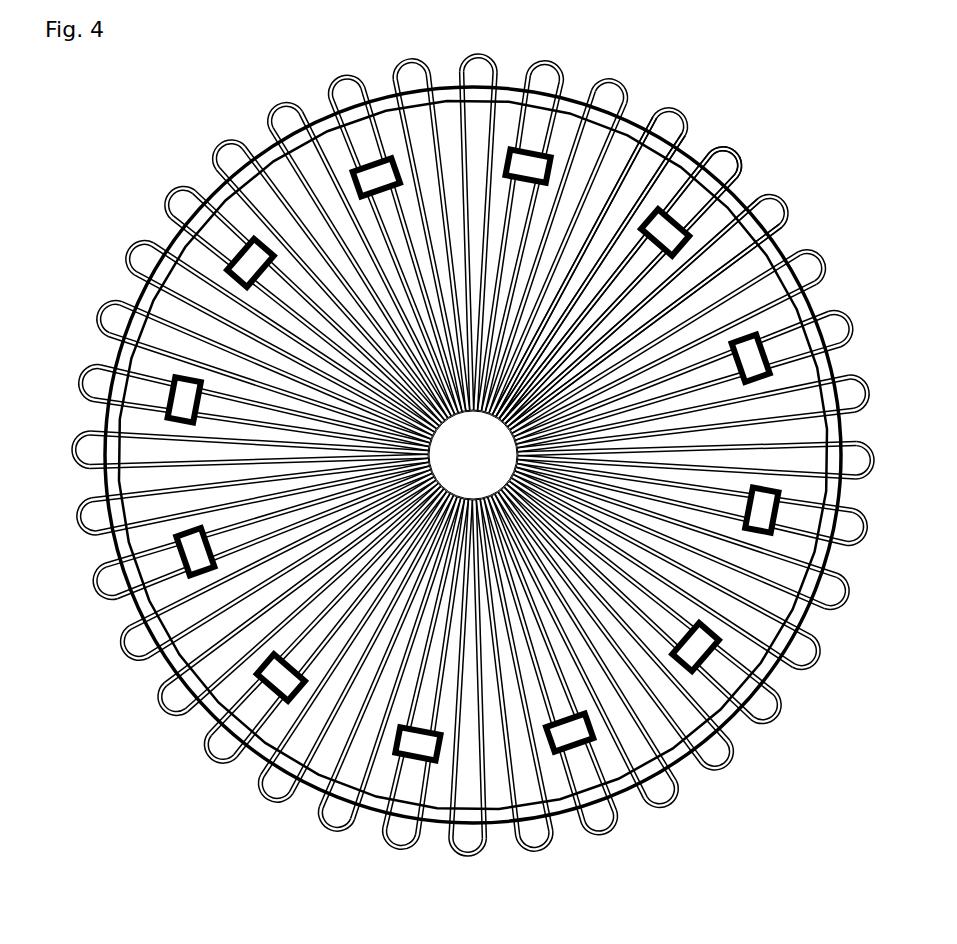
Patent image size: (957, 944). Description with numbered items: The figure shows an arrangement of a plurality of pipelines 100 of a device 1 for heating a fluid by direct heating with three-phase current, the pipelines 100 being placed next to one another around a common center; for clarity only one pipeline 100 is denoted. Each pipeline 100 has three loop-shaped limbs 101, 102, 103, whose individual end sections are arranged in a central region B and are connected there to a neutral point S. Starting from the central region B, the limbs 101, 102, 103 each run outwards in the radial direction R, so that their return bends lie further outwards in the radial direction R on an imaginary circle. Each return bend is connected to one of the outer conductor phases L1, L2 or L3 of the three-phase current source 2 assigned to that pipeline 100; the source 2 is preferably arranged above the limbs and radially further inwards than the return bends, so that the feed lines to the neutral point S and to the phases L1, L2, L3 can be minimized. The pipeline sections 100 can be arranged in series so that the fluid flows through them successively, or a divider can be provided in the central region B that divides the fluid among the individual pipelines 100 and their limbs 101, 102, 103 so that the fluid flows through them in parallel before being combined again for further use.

The device 1 is at (227, 127).
The three-phase current source 2 is at (687, 175).
The pipeline 100 is at (752, 163).
The first limb 101 is at (633, 142).
The second limb 102 is at (718, 210).
The third limb 103 is at (745, 275).
The first phase L1 is at (473, 439).
The second phase L2 is at (473, 441).
The third phase L3 is at (473, 450).
The radial direction R is at (335, 150).
The neutral point S is at (473, 455).
The central region B is at (462, 483).